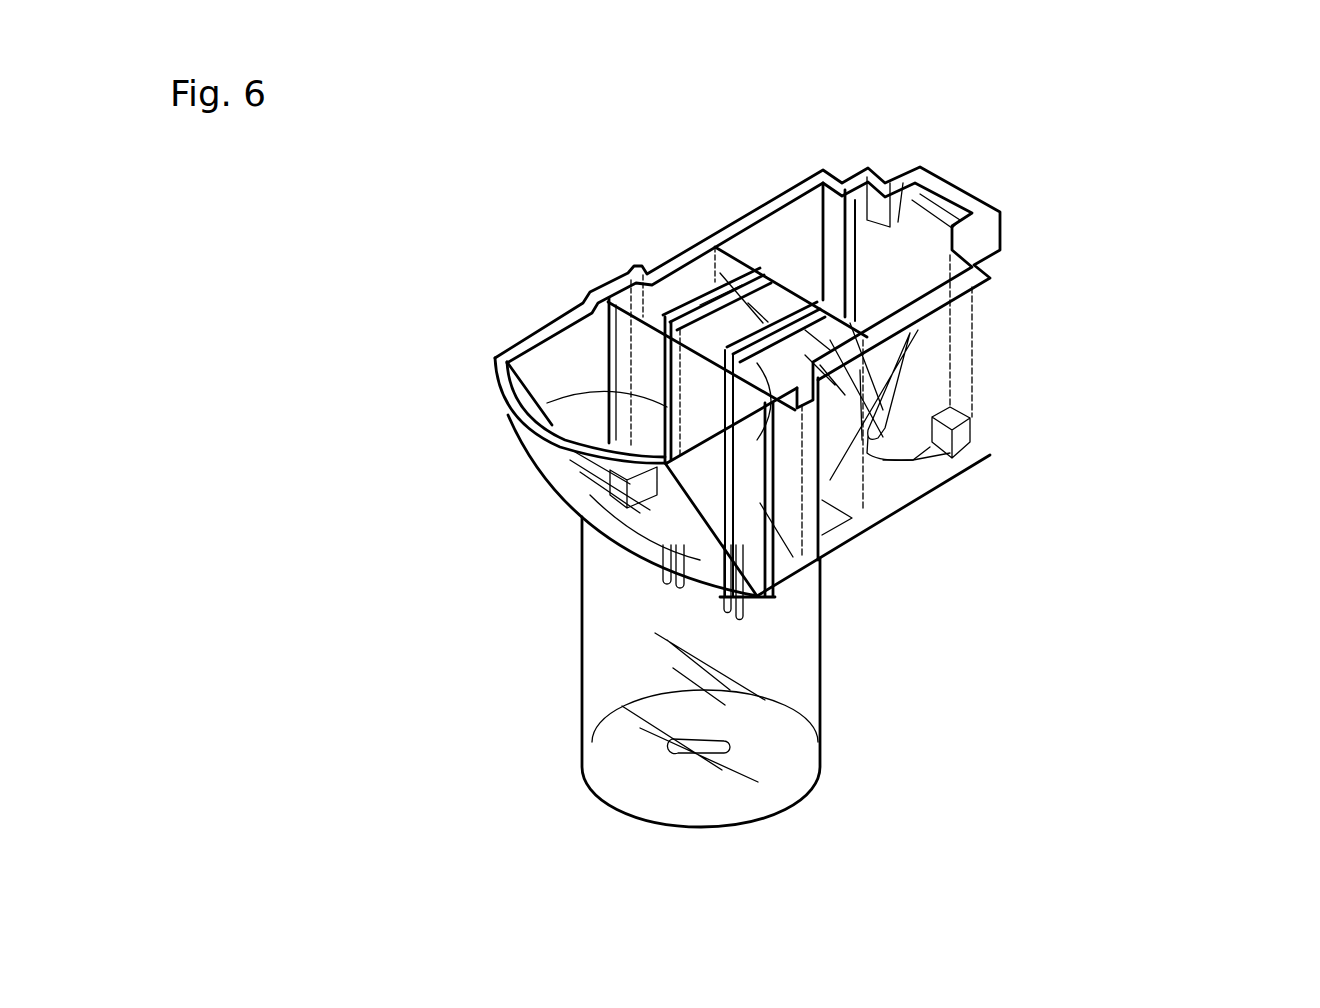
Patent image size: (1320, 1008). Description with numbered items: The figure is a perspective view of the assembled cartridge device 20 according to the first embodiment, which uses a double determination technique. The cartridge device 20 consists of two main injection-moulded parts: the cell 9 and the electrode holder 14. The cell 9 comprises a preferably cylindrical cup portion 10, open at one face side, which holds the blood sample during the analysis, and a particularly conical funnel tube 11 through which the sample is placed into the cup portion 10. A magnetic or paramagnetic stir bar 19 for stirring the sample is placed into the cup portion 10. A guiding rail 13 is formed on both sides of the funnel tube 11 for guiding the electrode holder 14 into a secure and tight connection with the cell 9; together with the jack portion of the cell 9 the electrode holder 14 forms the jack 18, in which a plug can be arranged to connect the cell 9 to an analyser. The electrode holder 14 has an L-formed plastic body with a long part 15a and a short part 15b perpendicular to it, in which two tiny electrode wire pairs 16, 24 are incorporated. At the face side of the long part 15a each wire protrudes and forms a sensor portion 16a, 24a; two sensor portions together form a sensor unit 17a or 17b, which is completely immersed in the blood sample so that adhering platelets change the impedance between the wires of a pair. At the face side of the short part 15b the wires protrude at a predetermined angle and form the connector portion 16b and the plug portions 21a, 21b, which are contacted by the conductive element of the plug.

The cell 9 is at (545, 657).
The cup portion 10 is at (630, 677).
The funnel tube 11 is at (552, 381).
The guiding rail 13 is at (625, 272).
The electrode holder 14 is at (662, 286).
The long part 15a is at (640, 360).
The short part 15b is at (700, 277).
The electrode wire pair 16 is at (760, 557).
The sensor portion 16a is at (743, 619).
The connector portion 16b is at (790, 432).
The sensor unit 17a is at (728, 622).
The sensor unit 17b is at (667, 585).
The jack 18 is at (787, 220).
The stir bar 19 is at (705, 747).
The cartridge device 20 is at (962, 539).
The plug portion 21a is at (750, 480).
The plug portion 21b is at (918, 330).
The electrode wire pair 24 is at (667, 407).
The sensor portion 24a is at (668, 572).